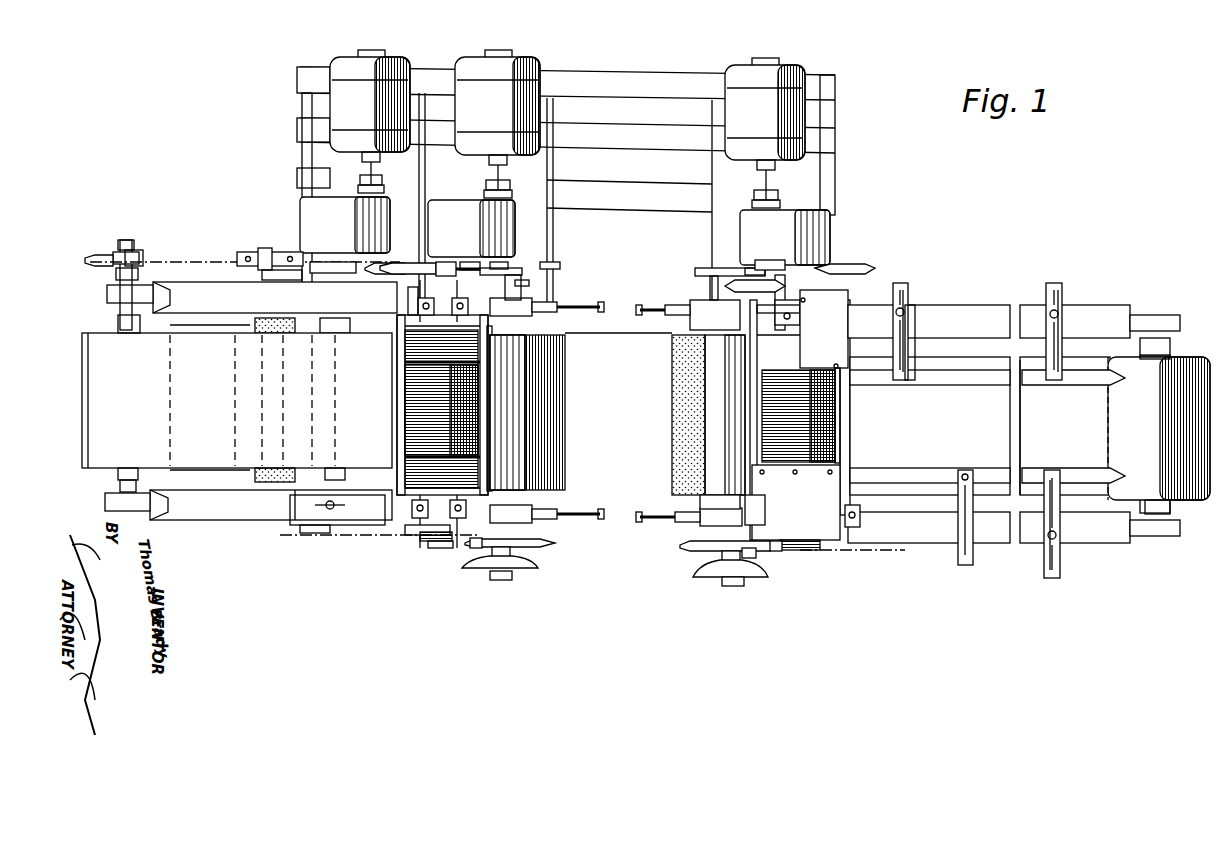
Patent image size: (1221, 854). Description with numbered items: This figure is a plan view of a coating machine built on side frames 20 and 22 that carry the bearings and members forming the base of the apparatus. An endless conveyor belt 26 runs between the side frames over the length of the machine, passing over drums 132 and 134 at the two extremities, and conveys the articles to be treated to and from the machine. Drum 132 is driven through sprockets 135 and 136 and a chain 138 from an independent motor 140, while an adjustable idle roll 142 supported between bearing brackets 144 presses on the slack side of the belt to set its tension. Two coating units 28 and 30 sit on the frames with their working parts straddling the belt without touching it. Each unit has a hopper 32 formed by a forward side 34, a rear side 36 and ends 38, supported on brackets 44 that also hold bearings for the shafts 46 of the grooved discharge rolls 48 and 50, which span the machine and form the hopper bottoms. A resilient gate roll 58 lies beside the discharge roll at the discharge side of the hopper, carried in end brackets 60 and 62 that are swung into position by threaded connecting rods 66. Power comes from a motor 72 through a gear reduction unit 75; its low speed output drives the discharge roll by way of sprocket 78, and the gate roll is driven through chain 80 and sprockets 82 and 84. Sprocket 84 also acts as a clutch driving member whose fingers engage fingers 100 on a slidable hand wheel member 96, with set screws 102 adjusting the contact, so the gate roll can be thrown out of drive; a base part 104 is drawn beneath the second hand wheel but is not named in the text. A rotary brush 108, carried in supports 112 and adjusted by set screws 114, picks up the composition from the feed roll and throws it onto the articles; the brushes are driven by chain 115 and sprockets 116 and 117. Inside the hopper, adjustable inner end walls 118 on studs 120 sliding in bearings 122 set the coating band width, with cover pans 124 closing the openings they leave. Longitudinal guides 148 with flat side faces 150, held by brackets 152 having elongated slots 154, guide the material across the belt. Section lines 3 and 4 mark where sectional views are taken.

The side frame 20 is at (1095, 318).
The side frame 22 is at (1098, 540).
The endless conveyor belt 26 is at (1175, 365).
The coating unit 28 is at (388, 364).
The coating unit 30 is at (882, 466).
The hopper 32 is at (470, 392).
The forward side 34 is at (485, 405).
The rear side 36 is at (398, 436).
The end 38 is at (870, 275).
The bracket 44 is at (400, 525).
The shaft 46 is at (430, 548).
The discharge roll 48 is at (845, 441).
The discharge roll 50 is at (470, 435).
The gate roll 58 is at (540, 352).
The end bracket 60 is at (540, 546).
The end bracket 62 is at (548, 300).
The threaded connecting rod 66 is at (490, 550).
The motor 72 is at (630, 129).
The gear reduction unit 75 is at (470, 200).
The sprocket 78 is at (520, 262).
The chain 80 is at (410, 540).
The sprocket 82 is at (435, 541).
The sprocket 84 is at (548, 548).
The slidable clutch member 96 is at (530, 572).
The finger 100 is at (495, 574).
The set screw 102 is at (756, 555).
The disk base 104 is at (742, 584).
The rotary brush 108 is at (545, 447).
The support 112 is at (700, 533).
The set screw 114 is at (645, 530).
The chain 115 is at (525, 270).
The sprocket 116 is at (560, 264).
The sprocket 117 is at (500, 262).
The adjustable inner end wall 118 is at (405, 380).
The stud 120 is at (430, 290).
The bearing 122 is at (858, 290).
The cover pan 124 is at (800, 415).
The drum 132 is at (1190, 505).
The drum 134 is at (97, 330).
The sprocket 135 is at (145, 257).
The sprocket 136 is at (333, 276).
The chain 138 is at (205, 258).
The motor 140 is at (340, 68).
The adjustable idle roll 142 is at (335, 328).
The bearing bracket 144 is at (345, 325).
The adjustable longitudinal guide 148 is at (1092, 385).
The flat side face 150 is at (1038, 382).
The bracket 152 is at (1063, 290).
The elongated slot 154 is at (905, 285).
The section line 3 is at (370, 410).
The section line 4 is at (447, 205).